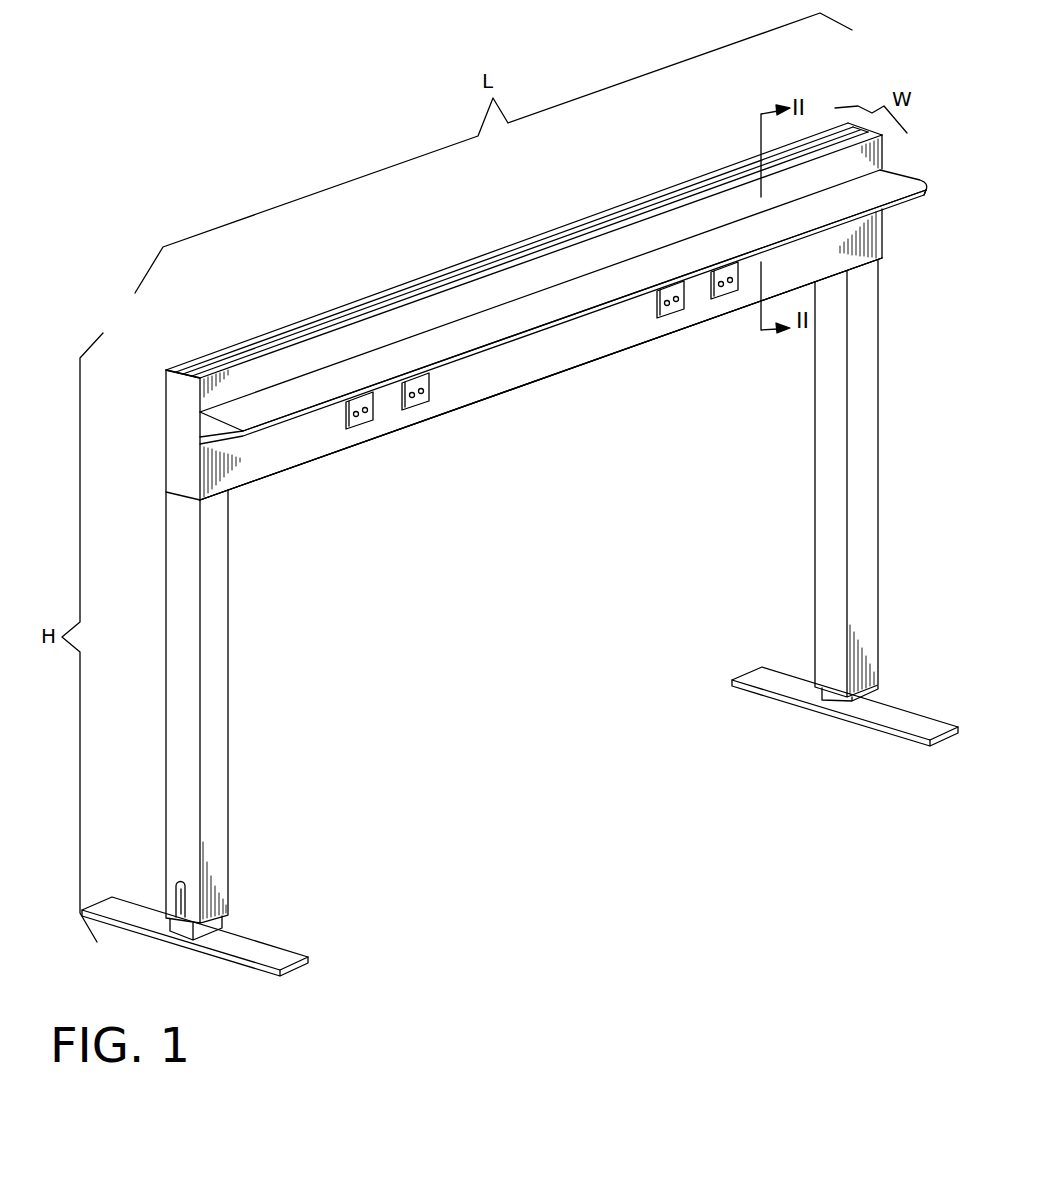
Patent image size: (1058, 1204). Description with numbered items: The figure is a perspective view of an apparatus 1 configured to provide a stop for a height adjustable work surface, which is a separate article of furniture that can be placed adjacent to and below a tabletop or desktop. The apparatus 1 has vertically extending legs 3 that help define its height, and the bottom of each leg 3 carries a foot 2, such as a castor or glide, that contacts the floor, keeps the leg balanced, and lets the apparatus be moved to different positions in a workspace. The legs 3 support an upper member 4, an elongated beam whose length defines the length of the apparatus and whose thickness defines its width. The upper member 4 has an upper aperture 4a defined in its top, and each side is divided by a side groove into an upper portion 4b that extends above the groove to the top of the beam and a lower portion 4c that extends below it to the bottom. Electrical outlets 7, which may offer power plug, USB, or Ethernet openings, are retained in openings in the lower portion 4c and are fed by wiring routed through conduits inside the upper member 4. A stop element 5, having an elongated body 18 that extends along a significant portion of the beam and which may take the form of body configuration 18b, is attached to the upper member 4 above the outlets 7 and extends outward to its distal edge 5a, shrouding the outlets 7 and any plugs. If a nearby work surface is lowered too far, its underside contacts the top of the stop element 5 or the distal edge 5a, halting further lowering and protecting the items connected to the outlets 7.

The apparatus 1 is at (246, 176).
The foot 2 is at (267, 948).
The leg 3 is at (832, 518).
The upper member 4 is at (238, 360).
The upper aperture 4a is at (603, 212).
The upper portion 4b is at (318, 350).
The lower portion 4c is at (300, 452).
The stop element 5 is at (476, 303).
The distal edge 5a is at (913, 193).
The electrical outlet 7 is at (426, 409).
The body 18 is at (550, 293).
The body configuration 18b is at (572, 347).